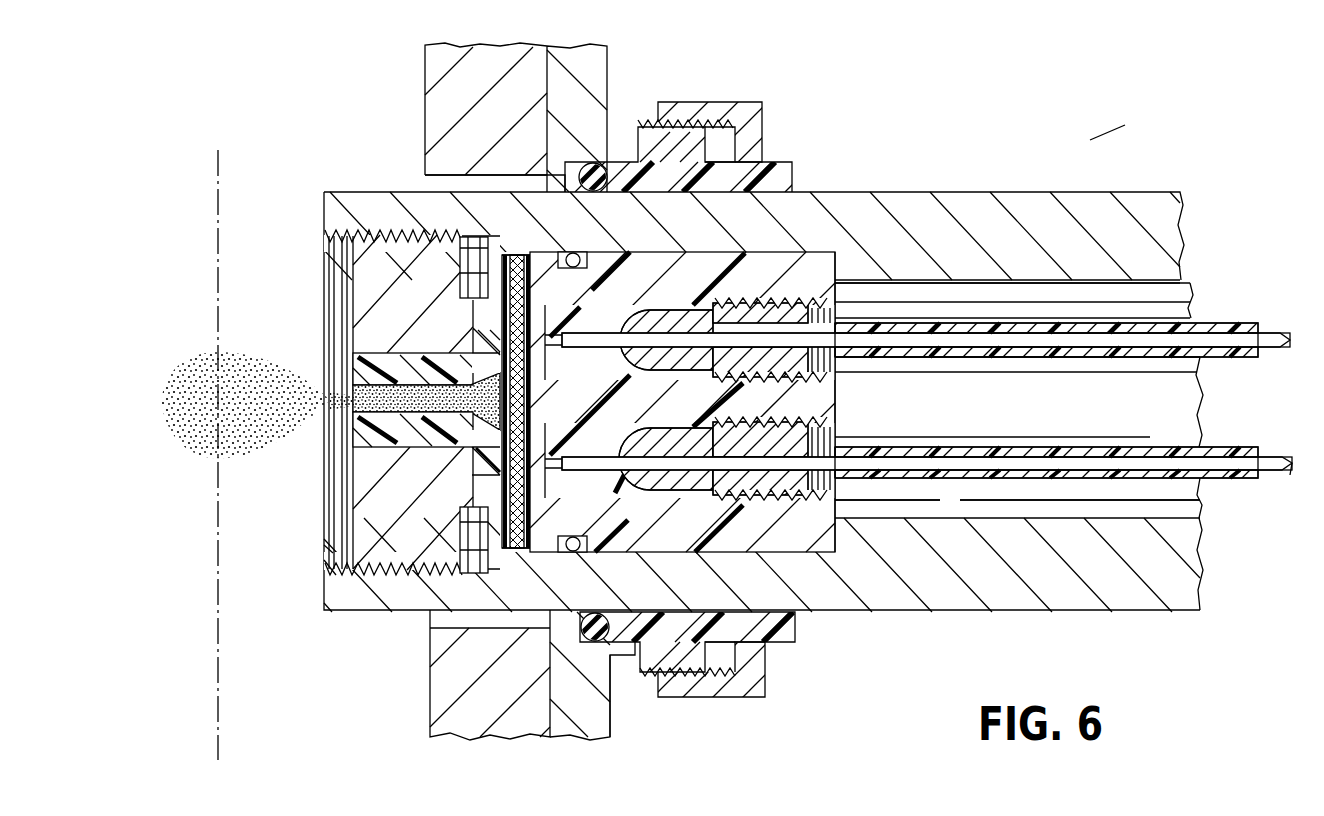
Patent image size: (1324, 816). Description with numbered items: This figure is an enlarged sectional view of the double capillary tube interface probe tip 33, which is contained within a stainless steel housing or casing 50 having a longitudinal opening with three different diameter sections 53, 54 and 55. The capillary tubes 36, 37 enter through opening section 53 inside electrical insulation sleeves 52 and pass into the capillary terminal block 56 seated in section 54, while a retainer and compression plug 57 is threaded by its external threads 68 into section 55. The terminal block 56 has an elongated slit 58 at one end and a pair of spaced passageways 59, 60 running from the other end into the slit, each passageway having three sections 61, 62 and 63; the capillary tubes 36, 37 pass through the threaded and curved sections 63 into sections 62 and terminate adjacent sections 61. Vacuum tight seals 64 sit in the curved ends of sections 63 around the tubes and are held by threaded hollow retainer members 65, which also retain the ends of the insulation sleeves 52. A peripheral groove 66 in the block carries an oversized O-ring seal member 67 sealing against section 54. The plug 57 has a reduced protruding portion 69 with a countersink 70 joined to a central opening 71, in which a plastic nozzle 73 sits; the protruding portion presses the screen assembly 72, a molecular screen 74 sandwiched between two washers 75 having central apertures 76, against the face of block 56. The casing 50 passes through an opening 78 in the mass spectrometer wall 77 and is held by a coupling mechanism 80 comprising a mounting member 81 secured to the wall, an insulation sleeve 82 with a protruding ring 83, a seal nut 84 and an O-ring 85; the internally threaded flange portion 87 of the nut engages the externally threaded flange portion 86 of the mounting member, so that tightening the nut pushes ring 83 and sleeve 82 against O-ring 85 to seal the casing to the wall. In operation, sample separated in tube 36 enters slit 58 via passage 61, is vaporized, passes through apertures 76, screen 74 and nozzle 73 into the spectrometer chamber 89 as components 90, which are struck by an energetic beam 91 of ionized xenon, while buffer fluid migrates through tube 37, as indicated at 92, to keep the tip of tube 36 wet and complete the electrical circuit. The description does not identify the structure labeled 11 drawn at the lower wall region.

The mounting plate / wall 11 is at (504, 748).
The double capillary tube interface probe tip 33 is at (1090, 140).
The capillary tube 36 is at (1268, 333).
The capillary tube 37 is at (1290, 458).
The housing or casing 50 is at (965, 192).
The electrical insulation sleeves 52 is at (1238, 357).
The opening section 53 is at (1030, 518).
The opening section 54 is at (835, 262).
The opening section 55 is at (332, 558).
The capillary terminal block 56 is at (835, 383).
The retainer and compression plug 57 is at (372, 518).
The elongated slit 58 is at (537, 330).
The passageway 59 is at (608, 324).
The passageway 60 is at (612, 471).
The passageway section 61 is at (546, 348).
The passageway section 62 is at (578, 456).
The passageway section 63 is at (668, 370).
The vacuum tight seals 64 is at (668, 311).
The threaded hollow retainer members 65 is at (780, 303).
The groove 66 is at (578, 553).
The seal member 67 is at (578, 253).
The external threads 68 is at (383, 232).
The protruding portion 69 is at (477, 490).
The countersink 70 is at (467, 458).
The centrally located opening 71 is at (412, 356).
The screen assembly 72 is at (513, 246).
The nozzle 73 is at (366, 354).
The molecular screen 74 is at (520, 256).
The spacers or washers 75 is at (514, 553).
The centrally located apertures 76 is at (505, 350).
The wall 77 is at (425, 112).
The opening 78 is at (423, 177).
The coupling mechanism 80 is at (706, 66).
The mounting member 81 is at (607, 82).
The electrical insulation sleeve 82 is at (795, 172).
The protruding ring 83 is at (735, 135).
The seal nut 84 is at (765, 106).
The O-ring 85 is at (600, 164).
The flange portion 86 is at (640, 676).
The flange portion 87 is at (665, 698).
The chamber 89 is at (268, 147).
The components of the sample material 90 is at (186, 474).
The energetic beam 91 is at (218, 722).
The buffer fluid migration 92 is at (1298, 466).